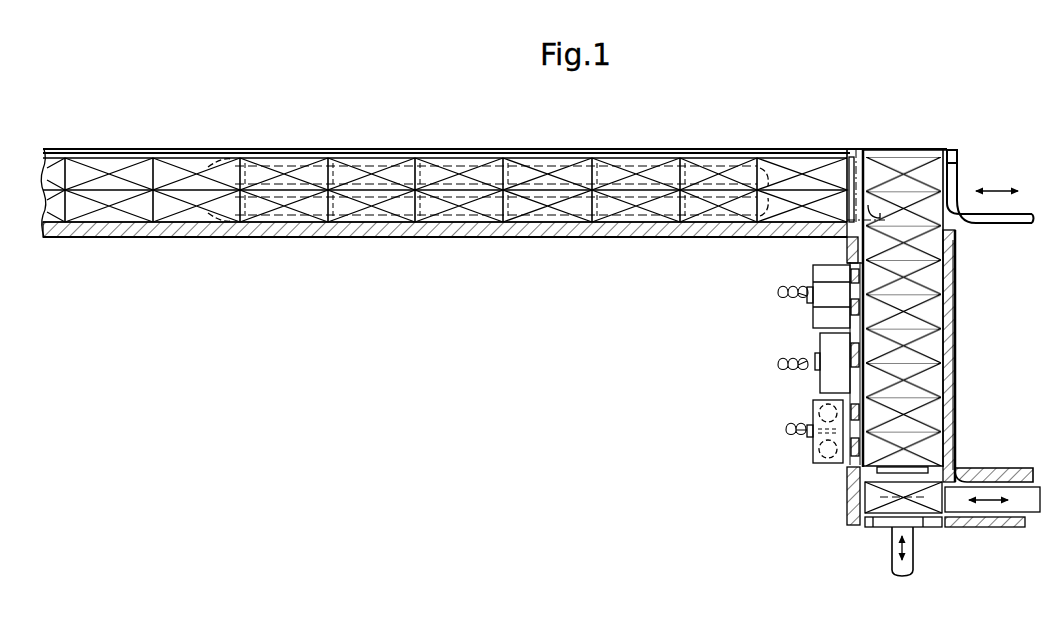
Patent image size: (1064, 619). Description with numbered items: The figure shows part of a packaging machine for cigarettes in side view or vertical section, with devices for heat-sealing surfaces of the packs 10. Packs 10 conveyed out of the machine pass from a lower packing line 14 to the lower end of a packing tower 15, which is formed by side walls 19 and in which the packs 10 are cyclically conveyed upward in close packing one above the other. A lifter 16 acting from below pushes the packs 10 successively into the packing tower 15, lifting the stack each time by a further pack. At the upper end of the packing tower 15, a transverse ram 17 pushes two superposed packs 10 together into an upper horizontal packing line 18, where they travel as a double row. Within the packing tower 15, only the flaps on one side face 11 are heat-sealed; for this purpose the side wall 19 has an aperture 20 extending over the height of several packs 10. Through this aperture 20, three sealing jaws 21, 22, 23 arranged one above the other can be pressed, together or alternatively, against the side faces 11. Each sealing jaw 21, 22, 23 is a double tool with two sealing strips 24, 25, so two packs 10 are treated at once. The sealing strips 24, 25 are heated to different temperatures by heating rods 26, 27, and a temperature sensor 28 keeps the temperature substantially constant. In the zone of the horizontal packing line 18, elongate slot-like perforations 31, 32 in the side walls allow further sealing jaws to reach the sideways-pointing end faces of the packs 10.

The pack 10 is at (903, 165).
The side face 11 is at (862, 172).
The lower packing line 14 is at (1003, 467).
The packing tower 15 is at (960, 322).
The lifter 16 is at (885, 525).
The transverse ram 17 is at (952, 176).
The upper horizontal packing line 18 is at (469, 149).
The side wall 19 is at (950, 288).
The aperture 20 is at (851, 245).
The sealing jaw 21 is at (813, 462).
The sealing jaw 22 is at (830, 372).
The sealing jaw 23 is at (815, 325).
The sealing strip 24 is at (849, 280).
The sealing strip 25 is at (846, 313).
The heating rod 26 is at (818, 415).
The heating rod 27 is at (828, 458).
The temperature sensor 28 is at (815, 368).
The perforation 31 is at (221, 170).
The perforation 32 is at (222, 212).